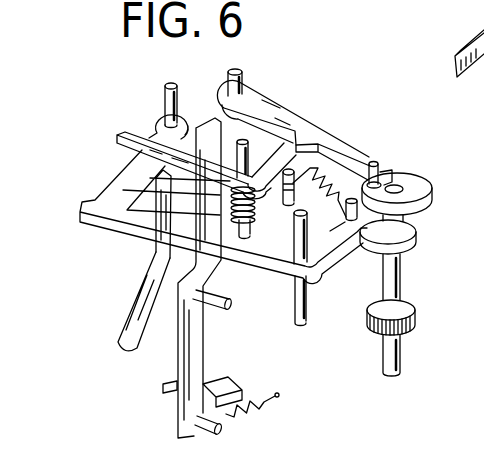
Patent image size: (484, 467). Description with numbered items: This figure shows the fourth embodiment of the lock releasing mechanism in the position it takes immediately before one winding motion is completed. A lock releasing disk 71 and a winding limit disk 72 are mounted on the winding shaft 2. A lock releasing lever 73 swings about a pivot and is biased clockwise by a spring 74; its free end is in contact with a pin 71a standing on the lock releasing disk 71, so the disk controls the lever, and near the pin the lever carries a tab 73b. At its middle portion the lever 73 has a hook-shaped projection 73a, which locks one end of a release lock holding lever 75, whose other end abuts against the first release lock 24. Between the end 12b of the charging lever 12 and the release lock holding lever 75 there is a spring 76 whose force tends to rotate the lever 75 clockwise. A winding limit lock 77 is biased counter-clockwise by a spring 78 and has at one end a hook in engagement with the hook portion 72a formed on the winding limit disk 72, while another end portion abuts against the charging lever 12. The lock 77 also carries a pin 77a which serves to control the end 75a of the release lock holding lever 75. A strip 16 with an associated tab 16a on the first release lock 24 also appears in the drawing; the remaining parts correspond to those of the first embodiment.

The winding shaft 2 is at (390, 287).
The charging lever 12 is at (132, 318).
The end of the charging lever 12b is at (165, 207).
The strip 16 is at (470, 45).
The tab with spring 16a is at (226, 388).
The first release lock 24 is at (200, 335).
The lock releasing disk 71 is at (413, 183).
The pin 71a is at (373, 162).
The winding limit disk 72 is at (413, 236).
The hook portion 72a is at (372, 252).
The lock releasing lever 73 is at (308, 136).
The hook-shaped projection 73a is at (312, 143).
The lever tab 73b is at (388, 165).
The spring 74 is at (333, 143).
The release lock holding lever 75 is at (265, 150).
The end of the release lock holding member 75a is at (125, 132).
The spring 76 is at (254, 202).
The winding limit lock 77 is at (265, 265).
The pin 77a is at (167, 96).
The spring 78 is at (347, 246).